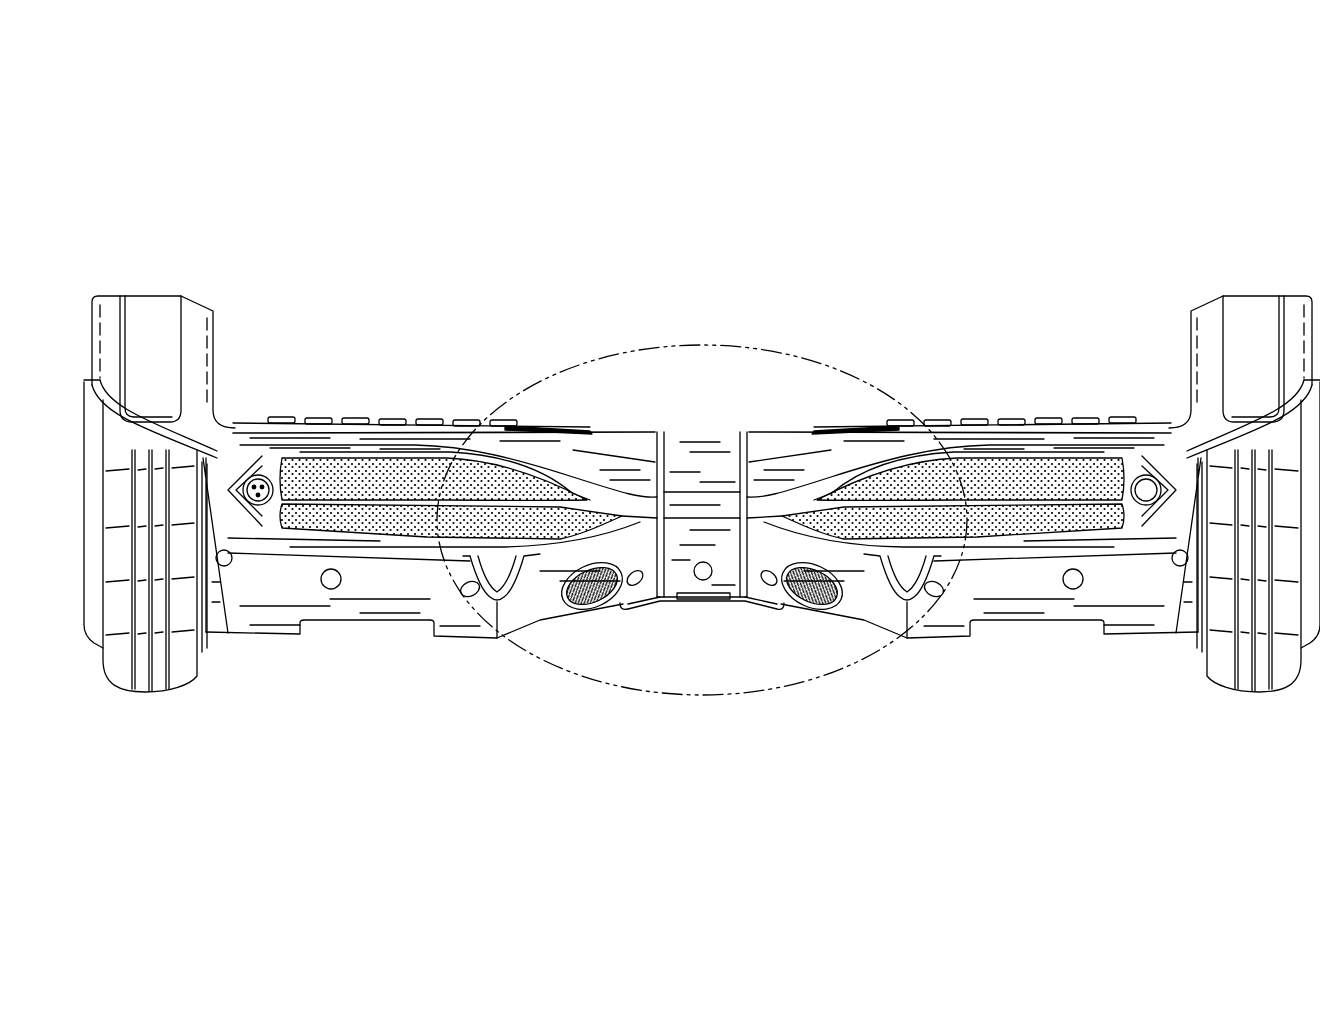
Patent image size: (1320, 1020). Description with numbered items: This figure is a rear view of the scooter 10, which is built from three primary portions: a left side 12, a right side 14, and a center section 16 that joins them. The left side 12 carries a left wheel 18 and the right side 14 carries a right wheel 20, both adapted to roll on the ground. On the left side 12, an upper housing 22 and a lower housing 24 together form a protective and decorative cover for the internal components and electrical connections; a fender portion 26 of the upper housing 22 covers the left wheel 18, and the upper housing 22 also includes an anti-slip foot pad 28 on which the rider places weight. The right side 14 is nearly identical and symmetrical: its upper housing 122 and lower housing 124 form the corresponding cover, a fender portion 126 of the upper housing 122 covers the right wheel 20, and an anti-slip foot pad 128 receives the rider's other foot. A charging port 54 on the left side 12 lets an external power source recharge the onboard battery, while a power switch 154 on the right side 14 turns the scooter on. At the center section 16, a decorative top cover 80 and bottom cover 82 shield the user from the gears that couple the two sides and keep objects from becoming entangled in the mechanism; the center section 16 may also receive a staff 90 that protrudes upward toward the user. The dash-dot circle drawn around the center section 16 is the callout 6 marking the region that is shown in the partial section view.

The scooter 10 is at (788, 150).
The partial section view callout 6 is at (793, 352).
The left side 12 is at (400, 372).
The right side 14 is at (989, 358).
The center section 16 is at (711, 481).
The left wheel 18 is at (183, 672).
The right wheel 20 is at (1245, 686).
The upper housing 22 is at (605, 455).
The lower housing 24 is at (400, 598).
The fender portion 26 is at (150, 305).
The anti-slip foot pad 28 is at (330, 419).
The charging port 54 is at (253, 476).
The top cover 80 is at (712, 432).
The bottom cover 82 is at (700, 590).
The staff 90 is at (727, 604).
The upper housing 122 is at (795, 452).
The lower housing 124 is at (1008, 598).
The fender portion 126 is at (1256, 305).
The anti-slip foot pad 128 is at (1048, 419).
The power switch 154 is at (1148, 476).